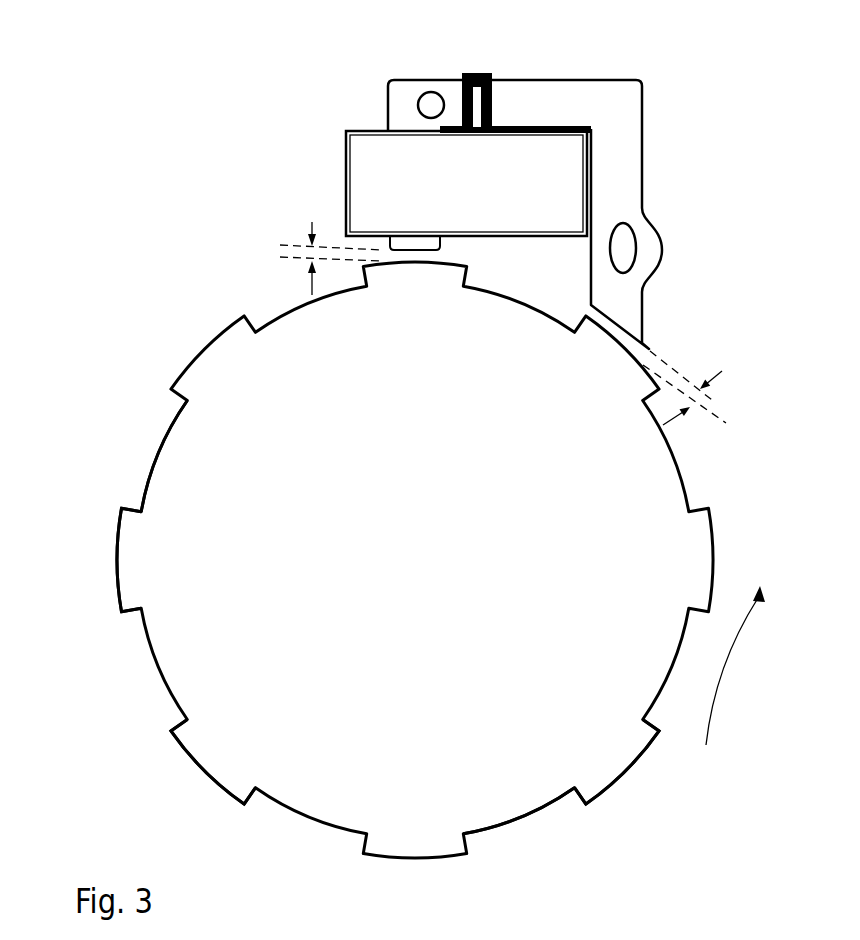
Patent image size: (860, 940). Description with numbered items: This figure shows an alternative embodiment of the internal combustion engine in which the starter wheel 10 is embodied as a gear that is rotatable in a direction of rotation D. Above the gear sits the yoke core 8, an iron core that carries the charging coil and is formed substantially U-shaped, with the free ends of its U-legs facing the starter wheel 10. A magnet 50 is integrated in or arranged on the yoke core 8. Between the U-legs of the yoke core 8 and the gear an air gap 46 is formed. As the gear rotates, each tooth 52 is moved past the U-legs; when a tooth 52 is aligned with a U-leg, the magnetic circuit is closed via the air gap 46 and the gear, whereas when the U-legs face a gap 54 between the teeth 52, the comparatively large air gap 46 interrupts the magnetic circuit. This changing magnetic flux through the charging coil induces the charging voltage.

The starter wheel 10 is at (237, 595).
The tooth 52 is at (129, 575).
The gap 54 is at (130, 465).
The yoke core 8 is at (615, 102).
The magnet 50 is at (485, 74).
The air gap 46 is at (312, 222).
The direction of rotation D is at (740, 688).